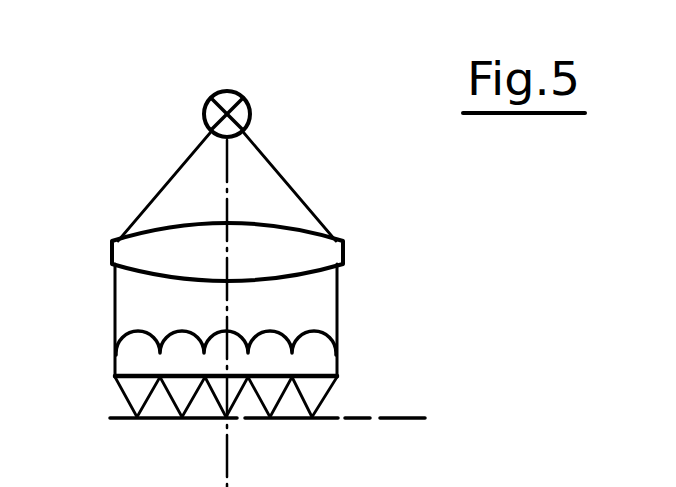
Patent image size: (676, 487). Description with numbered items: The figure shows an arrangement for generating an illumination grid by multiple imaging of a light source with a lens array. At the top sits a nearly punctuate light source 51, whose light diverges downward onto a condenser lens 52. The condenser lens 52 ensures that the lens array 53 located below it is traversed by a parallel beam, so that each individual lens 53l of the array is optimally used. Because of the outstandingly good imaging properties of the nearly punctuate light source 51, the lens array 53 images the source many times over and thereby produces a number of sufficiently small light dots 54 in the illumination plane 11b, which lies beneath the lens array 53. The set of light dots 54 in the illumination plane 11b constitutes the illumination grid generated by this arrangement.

The light source 51 is at (252, 111).
The condenser lens 52 is at (290, 257).
The lens array 53 is at (313, 363).
The individual lens 53l is at (180, 330).
The light dots 54 is at (182, 420).
The illumination plane 11b is at (397, 414).